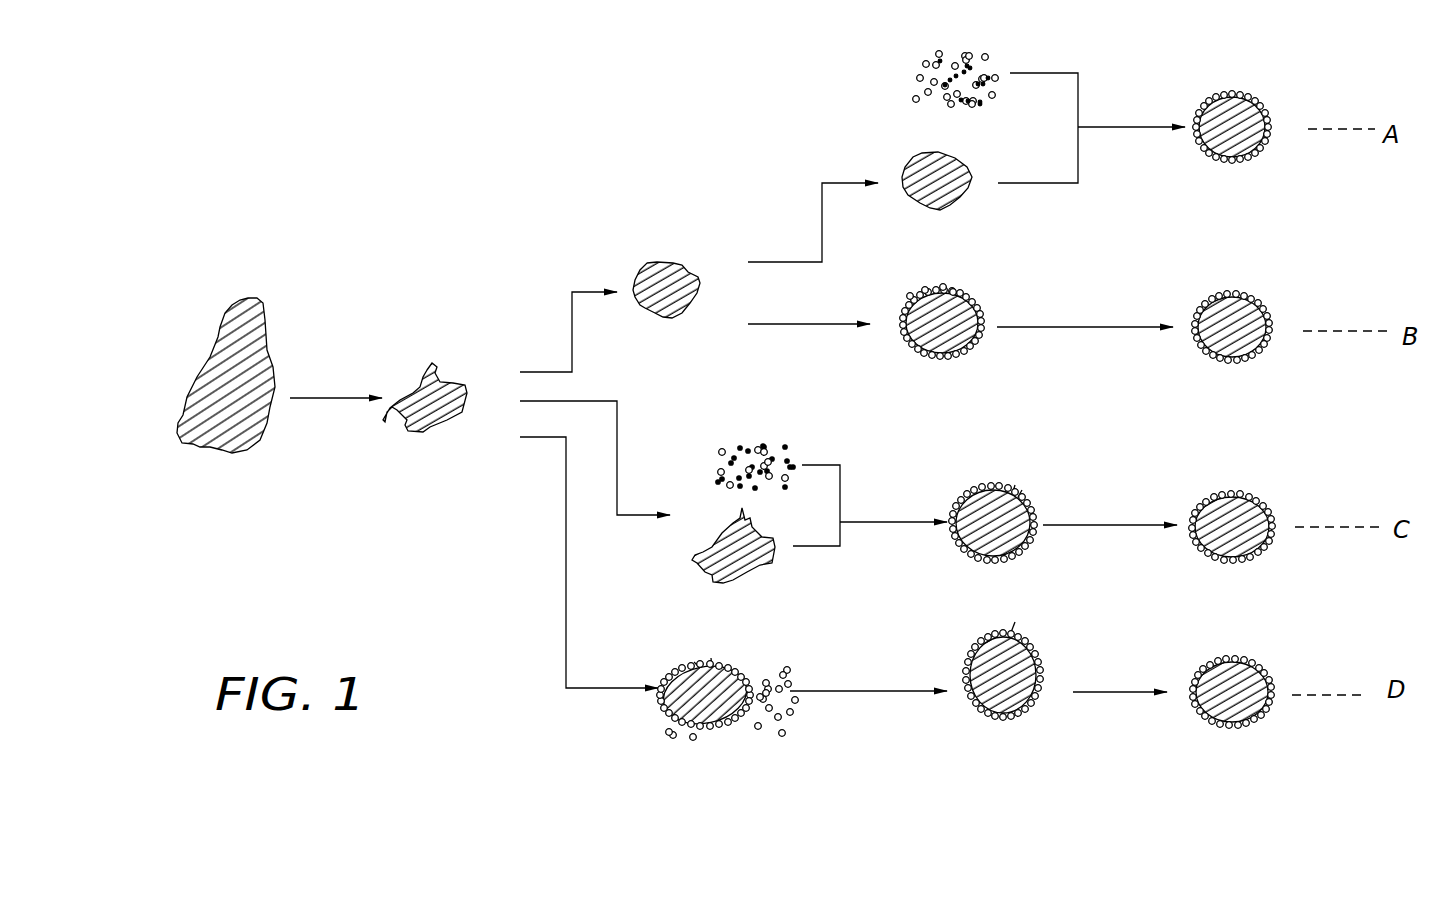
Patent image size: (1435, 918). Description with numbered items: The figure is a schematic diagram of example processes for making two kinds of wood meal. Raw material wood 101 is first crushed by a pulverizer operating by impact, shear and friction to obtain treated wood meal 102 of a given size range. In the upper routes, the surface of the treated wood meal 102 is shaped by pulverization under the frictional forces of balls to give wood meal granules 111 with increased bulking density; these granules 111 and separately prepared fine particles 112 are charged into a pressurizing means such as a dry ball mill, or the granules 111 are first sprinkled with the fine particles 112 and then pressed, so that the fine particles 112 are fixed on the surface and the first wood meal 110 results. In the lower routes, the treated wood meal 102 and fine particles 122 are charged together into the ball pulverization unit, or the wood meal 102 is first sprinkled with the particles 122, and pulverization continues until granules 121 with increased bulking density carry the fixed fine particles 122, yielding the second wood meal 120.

The raw material wood 101 is at (264, 298).
The treated wood meal 102 is at (428, 370).
The first wood meal 110 is at (1208, 162).
The wood meal granules 111 is at (675, 263).
The fine particles 112 is at (962, 55).
The second wood meal 120 is at (1272, 504).
The granules 121 is at (983, 543).
The fine particles 122 is at (783, 450).